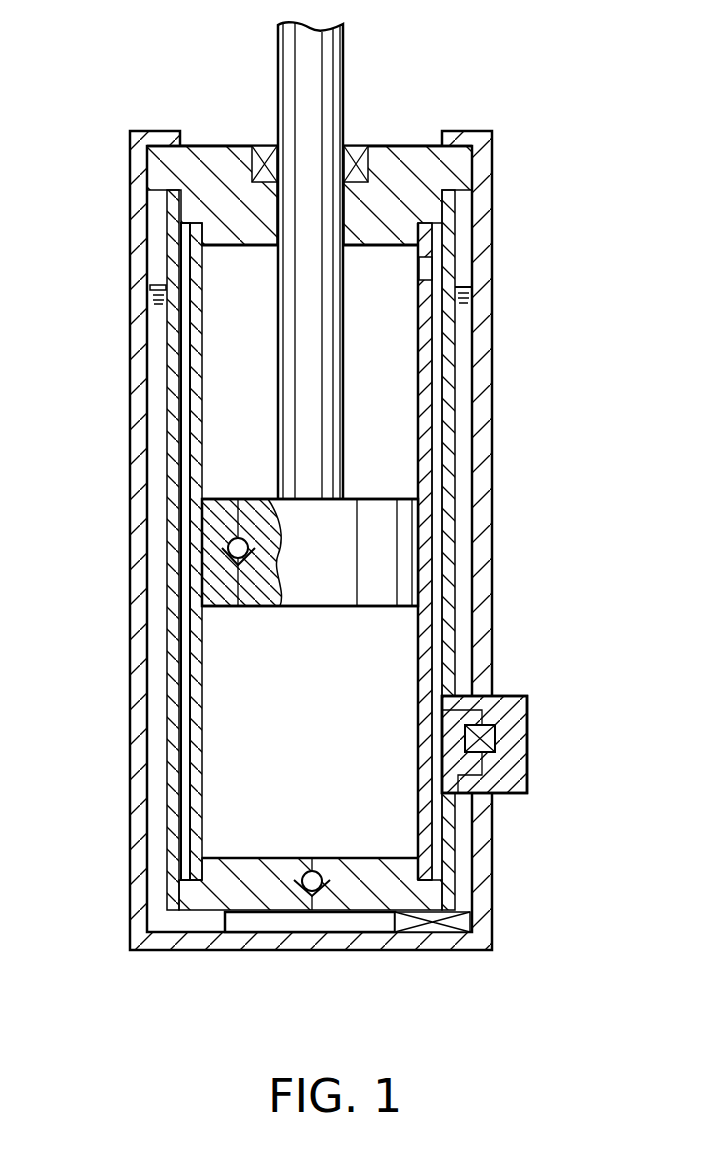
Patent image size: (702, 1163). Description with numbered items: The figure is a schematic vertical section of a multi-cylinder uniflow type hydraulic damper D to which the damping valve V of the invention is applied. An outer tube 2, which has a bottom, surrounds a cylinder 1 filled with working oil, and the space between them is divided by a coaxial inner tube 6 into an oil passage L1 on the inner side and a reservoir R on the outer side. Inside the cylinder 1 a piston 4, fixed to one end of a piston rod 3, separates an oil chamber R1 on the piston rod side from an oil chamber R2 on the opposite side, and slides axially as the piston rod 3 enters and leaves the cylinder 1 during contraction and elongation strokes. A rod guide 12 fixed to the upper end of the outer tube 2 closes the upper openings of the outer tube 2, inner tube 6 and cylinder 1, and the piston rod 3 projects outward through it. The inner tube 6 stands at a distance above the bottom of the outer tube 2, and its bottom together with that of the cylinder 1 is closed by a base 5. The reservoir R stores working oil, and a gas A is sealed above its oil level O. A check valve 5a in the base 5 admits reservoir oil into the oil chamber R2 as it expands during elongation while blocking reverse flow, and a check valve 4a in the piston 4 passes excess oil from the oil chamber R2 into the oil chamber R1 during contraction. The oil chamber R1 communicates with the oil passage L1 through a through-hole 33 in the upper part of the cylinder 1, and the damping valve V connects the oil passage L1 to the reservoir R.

The hydraulic damper D is at (110, 80).
The cylinder 1 is at (197, 413).
The outer tube 2 is at (483, 238).
The piston rod 3 is at (332, 67).
The piston 4 is at (373, 547).
The check valve 4a is at (227, 562).
The base 5 is at (253, 857).
The check valve 5a is at (298, 895).
The inner tube 6 is at (446, 348).
The rod guide 12 is at (443, 167).
The through-hole 33 is at (425, 265).
The gas A is at (155, 228).
The oil level O is at (162, 285).
The reservoir R is at (157, 515).
The oil chamber R1 is at (264, 346).
The oil chamber R2 is at (264, 717).
The oil passage L1 is at (436, 402).
The damping valve V is at (495, 735).